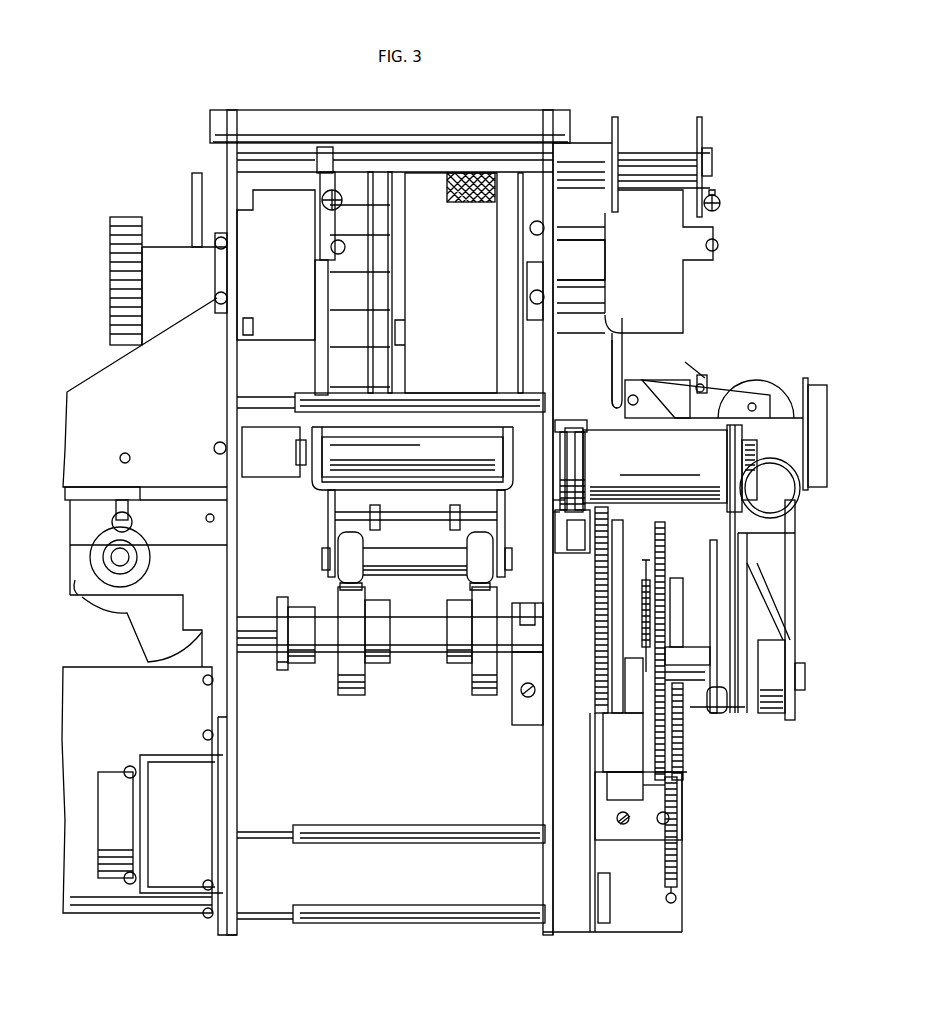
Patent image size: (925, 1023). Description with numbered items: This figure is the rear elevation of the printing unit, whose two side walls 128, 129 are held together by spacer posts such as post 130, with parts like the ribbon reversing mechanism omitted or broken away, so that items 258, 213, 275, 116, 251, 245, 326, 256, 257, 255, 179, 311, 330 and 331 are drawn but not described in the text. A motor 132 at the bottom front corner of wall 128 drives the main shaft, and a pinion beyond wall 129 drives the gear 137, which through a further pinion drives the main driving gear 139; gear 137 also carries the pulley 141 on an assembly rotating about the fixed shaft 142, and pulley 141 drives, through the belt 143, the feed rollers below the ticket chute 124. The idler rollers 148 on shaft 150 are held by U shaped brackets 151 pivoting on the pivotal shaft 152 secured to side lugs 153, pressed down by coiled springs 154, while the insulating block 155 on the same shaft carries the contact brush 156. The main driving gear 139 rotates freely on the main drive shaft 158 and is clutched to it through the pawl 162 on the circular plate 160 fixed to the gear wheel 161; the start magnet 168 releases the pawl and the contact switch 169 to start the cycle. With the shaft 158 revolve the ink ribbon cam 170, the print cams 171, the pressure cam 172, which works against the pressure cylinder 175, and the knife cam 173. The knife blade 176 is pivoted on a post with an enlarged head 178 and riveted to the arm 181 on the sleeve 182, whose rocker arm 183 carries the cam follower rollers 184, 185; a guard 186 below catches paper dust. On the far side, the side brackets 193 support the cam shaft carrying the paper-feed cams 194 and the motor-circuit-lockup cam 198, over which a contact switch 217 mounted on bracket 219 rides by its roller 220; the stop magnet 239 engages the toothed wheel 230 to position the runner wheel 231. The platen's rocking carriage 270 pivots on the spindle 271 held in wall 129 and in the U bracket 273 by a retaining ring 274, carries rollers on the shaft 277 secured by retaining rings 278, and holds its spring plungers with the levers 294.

The wall 128 is at (238, 110).
The wall 129 is at (548, 110).
The spacer post 130 is at (372, 112).
The gear 258 is at (136, 222).
The plate 213 is at (192, 190).
The stop magnet 239 is at (250, 235).
The bracket 219 is at (100, 385).
The screw 275 is at (213, 450).
The contact switch 217 is at (140, 495).
The roller 220 is at (132, 521).
The motor-circuit-lockup cam 198 is at (140, 565).
The side bracket 193 is at (78, 597).
The paper-feed cam 194 is at (145, 628).
The motor 132 is at (85, 667).
The motor block 116 is at (115, 780).
The toothed wheel 230 is at (318, 362).
The runner wheel 231 is at (358, 219).
The rod 251 is at (385, 252).
The housing 245 is at (462, 293).
The bar 326 is at (302, 393).
The bracket 256 is at (634, 200).
The block 257 is at (592, 300).
The hook 255 is at (612, 358).
The side lug 153 is at (637, 380).
The pivotal shaft 152 is at (634, 412).
The coiled spring 154 is at (722, 399).
The contact brush 156 is at (688, 360).
The block 155 is at (708, 380).
The idler roller 148 is at (748, 378).
The shaft 150 is at (756, 403).
The ticket chute 124 is at (817, 395).
The U shaped bracket 151 is at (712, 420).
The sleeve 182 is at (712, 500).
The enlarged head 178 is at (790, 500).
The cam follower roller 185 is at (765, 533).
The belt 143 is at (790, 590).
The pulley 141 is at (780, 713).
The fixed shaft 142 is at (800, 685).
The cam follower roller 184 is at (716, 715).
The knife cam 173 is at (713, 540).
The rocker arm 183 is at (730, 610).
The gear 137 is at (680, 590).
The main driving gear 139 is at (662, 560).
The gear wheel 161 is at (605, 530).
The circular plate 160 is at (620, 548).
The pawl 162 is at (630, 697).
The contact switch 169 is at (617, 750).
The start magnet 168 is at (678, 886).
The guard 186 is at (575, 548).
The arm 181 is at (583, 455).
The arm 179 is at (553, 498).
The knife blade 176 is at (560, 510).
The spindle 271 is at (452, 448).
The retaining ring 274 is at (296, 453).
The U bracket 273 is at (263, 477).
The rocking carriage 270 is at (330, 525).
The lever 294 is at (452, 522).
The shaft 277 is at (328, 556).
The retaining ring 278 is at (328, 575).
The frame 311 is at (237, 572).
The main drive shaft 158 is at (430, 650).
The ink ribbon cam 170 is at (283, 670).
The print cam 171 is at (470, 690).
The pressure cam 172 is at (500, 680).
The pressure cylinder 175 is at (530, 720).
The bar 330 is at (430, 828).
The bar 331 is at (430, 906).